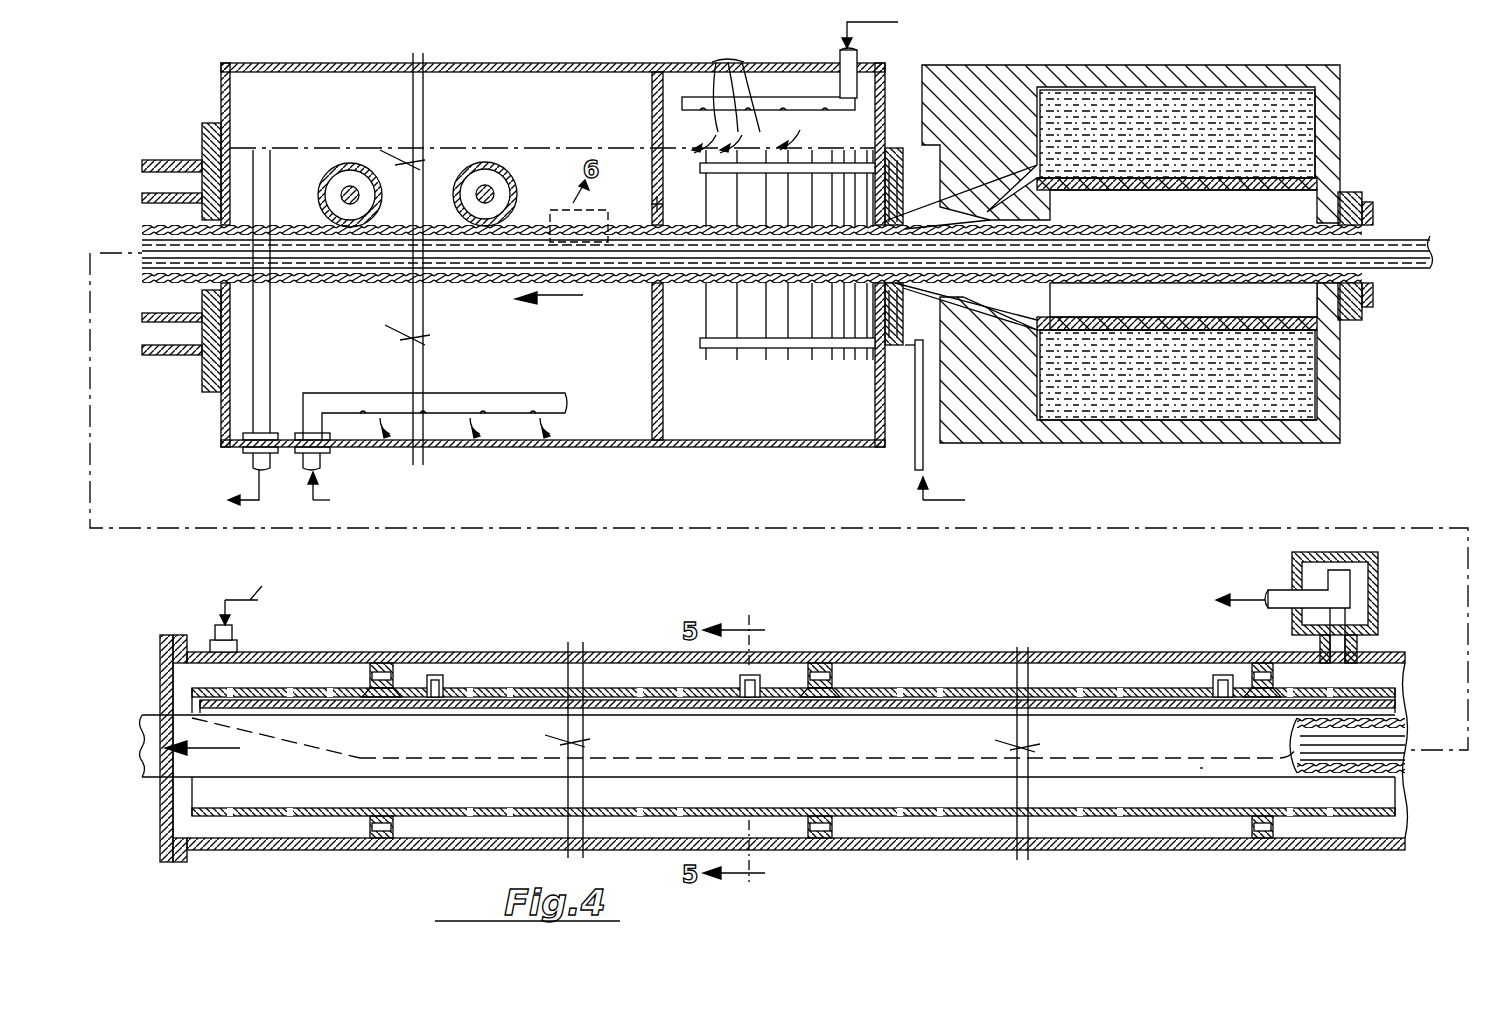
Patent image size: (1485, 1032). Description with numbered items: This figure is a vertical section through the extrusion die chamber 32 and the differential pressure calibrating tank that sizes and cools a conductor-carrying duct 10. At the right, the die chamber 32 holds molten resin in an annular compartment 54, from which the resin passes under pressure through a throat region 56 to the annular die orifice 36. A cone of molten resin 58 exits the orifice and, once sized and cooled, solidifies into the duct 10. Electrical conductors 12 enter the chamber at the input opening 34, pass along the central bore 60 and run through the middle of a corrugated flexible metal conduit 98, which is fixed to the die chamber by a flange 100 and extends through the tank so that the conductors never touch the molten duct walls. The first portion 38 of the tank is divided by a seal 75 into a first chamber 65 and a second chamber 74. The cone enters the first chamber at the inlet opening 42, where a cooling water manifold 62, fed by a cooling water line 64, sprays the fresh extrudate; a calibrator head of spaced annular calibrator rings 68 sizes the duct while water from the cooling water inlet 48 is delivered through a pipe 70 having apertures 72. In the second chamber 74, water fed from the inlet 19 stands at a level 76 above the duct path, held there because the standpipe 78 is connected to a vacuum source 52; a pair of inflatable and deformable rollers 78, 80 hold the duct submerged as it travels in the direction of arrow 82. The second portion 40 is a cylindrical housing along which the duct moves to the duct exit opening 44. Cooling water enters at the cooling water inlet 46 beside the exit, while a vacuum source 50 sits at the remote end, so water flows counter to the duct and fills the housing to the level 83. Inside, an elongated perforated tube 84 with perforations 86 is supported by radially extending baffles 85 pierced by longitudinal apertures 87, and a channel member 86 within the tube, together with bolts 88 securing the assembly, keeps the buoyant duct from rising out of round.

The duct 10 is at (1202, 768).
The electrical conductors 12 is at (1432, 254).
The water inlet 19 is at (323, 496).
The extrusion die chamber 32 is at (1160, 443).
The input opening 34 is at (1370, 307).
The annular die orifice 36 is at (945, 190).
The first portion 38 is at (587, 448).
The second portion 40 is at (1075, 850).
The inlet opening 42 is at (890, 294).
The duct exit opening 44 is at (160, 707).
The cooling water inlet 46 is at (269, 609).
The cooling water inlet 48 is at (900, 34).
The vacuum source 50 is at (1256, 600).
The vacuum source 52 is at (253, 474).
The annular compartment 54 is at (1170, 128).
The throat region 56 is at (1012, 190).
The cone of molten resin 58 is at (906, 222).
The central bore 60 is at (1350, 320).
The cooling water manifold 62 is at (892, 150).
The cooling water line 64 is at (919, 500).
The first chamber 65 is at (804, 416).
The annular calibrator rings 68 is at (764, 363).
The pipe 70 is at (795, 104).
The apertures 72 is at (746, 93).
The second chamber 74 is at (630, 410).
The seal 75 is at (650, 210).
The water level 76 is at (440, 150).
The standpipe 78 is at (350, 163).
The inflatable and deformable roller 80 is at (494, 162).
The arrow 82 is at (557, 300).
The water level 83 is at (1000, 663).
The elongated tube 84 is at (1100, 688).
The baffles 85 is at (393, 684).
The perforations 86 is at (928, 688).
The apertures 87 is at (378, 663).
The bolt 88 is at (436, 676).
The flexible metal conduit 98 is at (1340, 225).
The flange 100 is at (1368, 202).